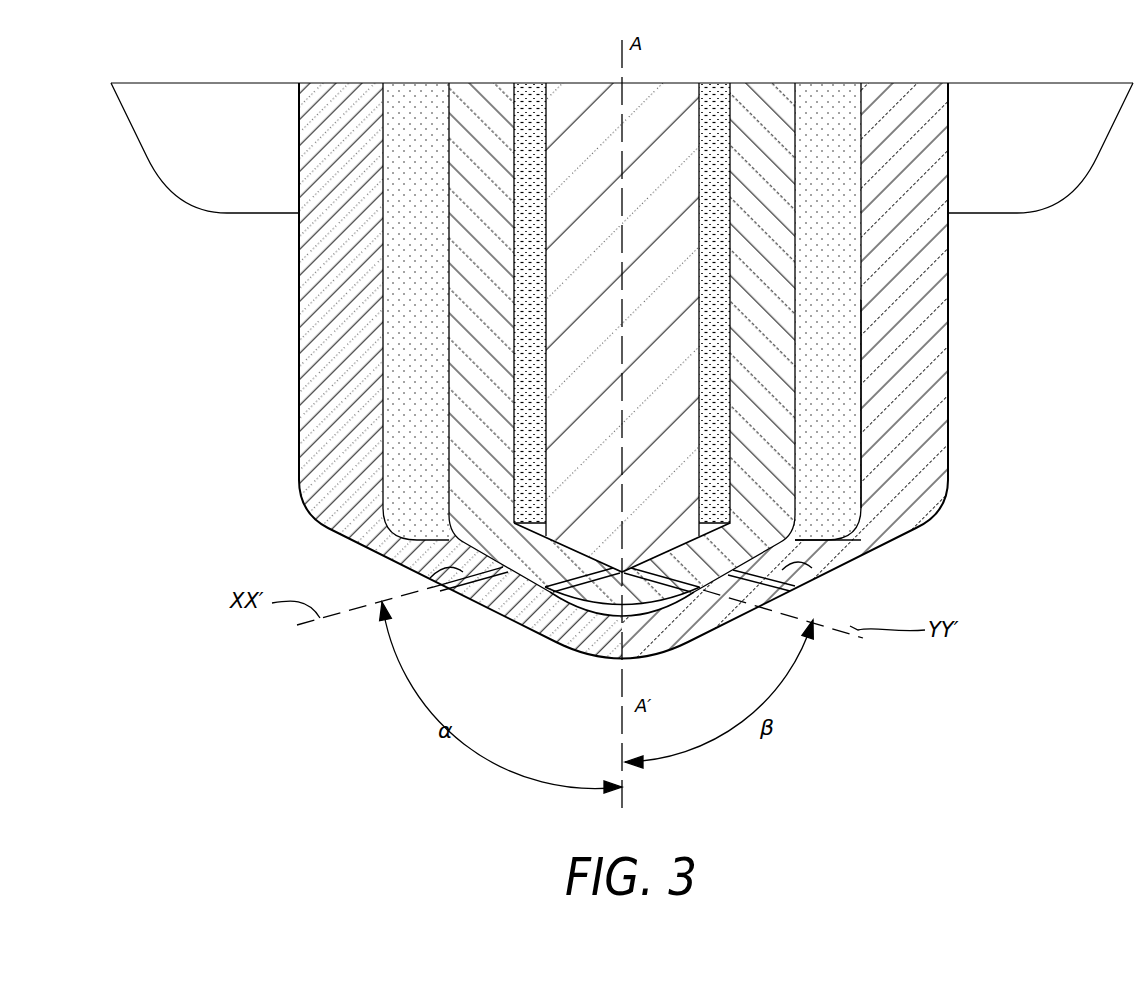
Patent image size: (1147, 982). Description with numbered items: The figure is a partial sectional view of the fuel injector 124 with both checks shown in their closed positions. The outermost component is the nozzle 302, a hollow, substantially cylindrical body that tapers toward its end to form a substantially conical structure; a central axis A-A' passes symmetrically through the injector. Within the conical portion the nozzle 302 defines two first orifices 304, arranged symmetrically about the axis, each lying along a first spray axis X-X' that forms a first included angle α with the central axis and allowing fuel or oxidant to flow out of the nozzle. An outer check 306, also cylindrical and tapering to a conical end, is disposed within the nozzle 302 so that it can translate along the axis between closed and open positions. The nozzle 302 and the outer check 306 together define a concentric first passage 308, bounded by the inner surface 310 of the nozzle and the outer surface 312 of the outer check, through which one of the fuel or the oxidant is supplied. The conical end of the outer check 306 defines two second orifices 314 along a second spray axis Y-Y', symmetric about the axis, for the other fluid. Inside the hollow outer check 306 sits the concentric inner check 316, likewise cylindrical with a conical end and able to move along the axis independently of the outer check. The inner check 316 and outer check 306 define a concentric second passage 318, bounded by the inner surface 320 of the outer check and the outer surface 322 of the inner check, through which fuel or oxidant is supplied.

The fuel injector 124 is at (200, 55).
The nozzle 302 is at (278, 250).
The first orifice 304 is at (427, 577).
The outer check 306 is at (795, 372).
The first passage 308 is at (833, 423).
The inner surface of the nozzle 310 is at (857, 297).
The outer surface of the outer check 312 is at (795, 272).
The second orifice 314 is at (563, 592).
The inner check 316 is at (543, 375).
The second passage 318 is at (522, 437).
The inner surface of the outer check 320 is at (515, 302).
The outer surface of the inner check 322 is at (543, 265).